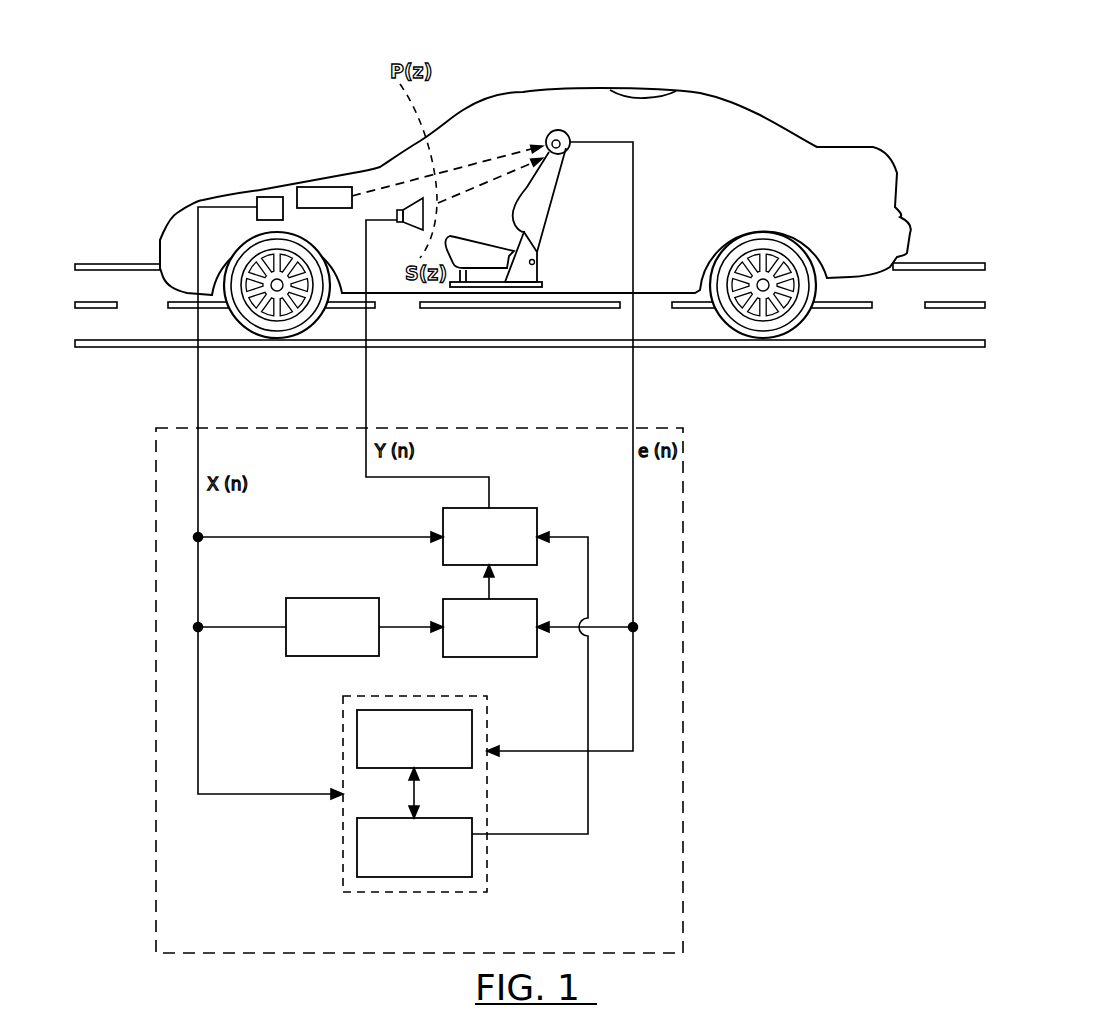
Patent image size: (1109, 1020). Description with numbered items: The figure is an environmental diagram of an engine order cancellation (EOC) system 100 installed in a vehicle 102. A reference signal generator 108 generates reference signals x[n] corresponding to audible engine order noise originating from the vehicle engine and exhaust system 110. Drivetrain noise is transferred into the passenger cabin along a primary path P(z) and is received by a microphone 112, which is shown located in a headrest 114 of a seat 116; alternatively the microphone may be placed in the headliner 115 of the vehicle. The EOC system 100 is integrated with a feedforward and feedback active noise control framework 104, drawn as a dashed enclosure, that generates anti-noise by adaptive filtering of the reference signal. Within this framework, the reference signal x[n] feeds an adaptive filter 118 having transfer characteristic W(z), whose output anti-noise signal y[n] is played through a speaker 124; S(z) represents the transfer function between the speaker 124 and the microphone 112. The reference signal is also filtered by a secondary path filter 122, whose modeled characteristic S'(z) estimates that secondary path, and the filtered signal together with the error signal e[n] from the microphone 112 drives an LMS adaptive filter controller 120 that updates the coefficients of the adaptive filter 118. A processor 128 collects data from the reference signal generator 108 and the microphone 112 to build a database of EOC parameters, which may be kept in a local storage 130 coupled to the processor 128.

The engine order cancellation (EOC) system 100 is at (118, 35).
The vehicle 102 is at (782, 128).
The active noise control (ANC) framework 104 is at (683, 657).
The reference signal generator 108 is at (267, 197).
The vehicle engine and exhaust system 110 is at (317, 187).
The microphone 112 is at (553, 131).
The headrest 114 is at (562, 131).
The headliner 115 is at (663, 91).
The seat 116 is at (550, 213).
The adaptive filter 118 is at (508, 508).
The adaptive filter controller 120 is at (497, 657).
The secondary path filter 122 is at (312, 656).
The speaker 124 is at (410, 205).
The processor 128 is at (357, 752).
The storage 130 is at (357, 845).